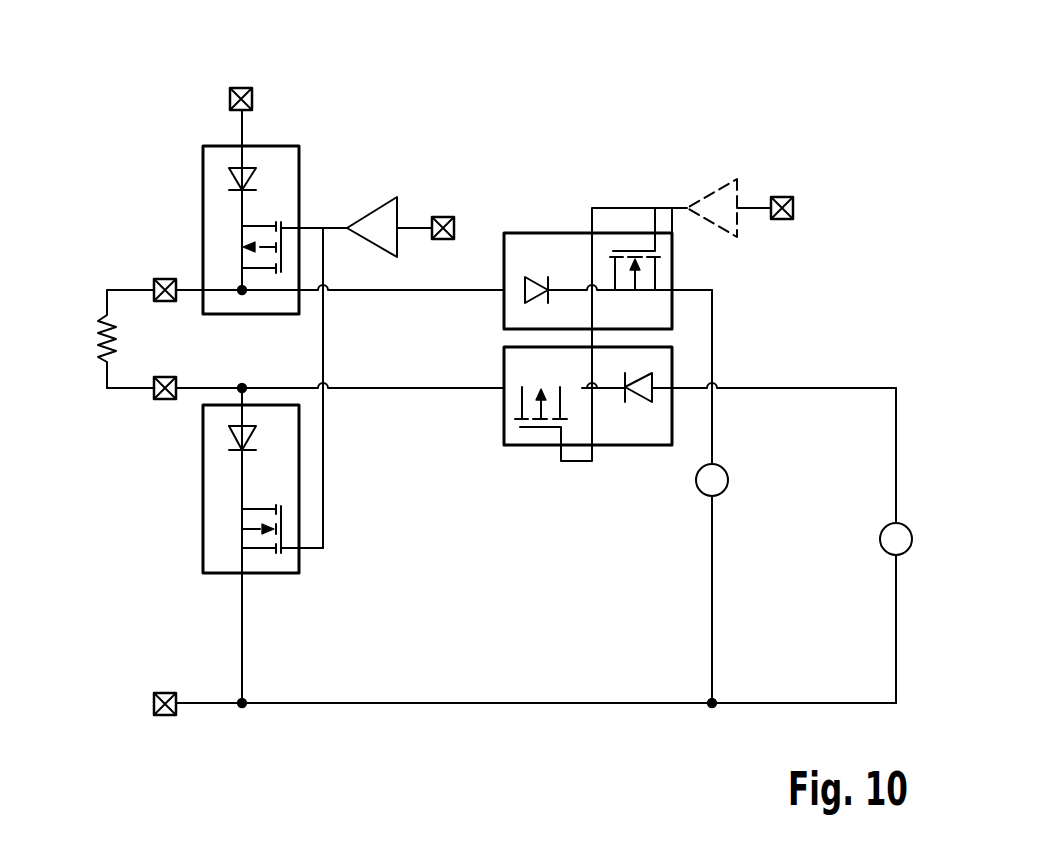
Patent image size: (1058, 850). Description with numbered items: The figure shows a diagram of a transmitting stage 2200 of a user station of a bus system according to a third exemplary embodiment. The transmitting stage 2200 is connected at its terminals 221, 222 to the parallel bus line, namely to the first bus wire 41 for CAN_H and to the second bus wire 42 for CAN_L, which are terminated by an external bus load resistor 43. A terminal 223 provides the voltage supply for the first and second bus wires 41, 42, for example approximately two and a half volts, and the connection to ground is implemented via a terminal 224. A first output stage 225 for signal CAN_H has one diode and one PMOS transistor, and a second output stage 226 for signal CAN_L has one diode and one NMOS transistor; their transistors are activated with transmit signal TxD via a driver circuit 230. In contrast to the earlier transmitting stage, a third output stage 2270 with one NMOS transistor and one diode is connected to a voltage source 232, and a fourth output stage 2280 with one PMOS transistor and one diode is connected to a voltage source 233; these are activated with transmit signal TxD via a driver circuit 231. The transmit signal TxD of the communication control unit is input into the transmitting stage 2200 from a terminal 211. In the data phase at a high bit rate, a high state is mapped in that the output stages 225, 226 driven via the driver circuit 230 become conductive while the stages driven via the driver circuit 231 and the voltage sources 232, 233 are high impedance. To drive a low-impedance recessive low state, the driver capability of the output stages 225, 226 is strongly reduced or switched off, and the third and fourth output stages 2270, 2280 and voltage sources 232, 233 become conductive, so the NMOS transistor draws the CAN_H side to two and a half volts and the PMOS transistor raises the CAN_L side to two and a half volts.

The transmitting stage 2200 is at (830, 98).
The first bus wire 41 is at (107, 289).
The second bus wire 42 is at (107, 390).
The external bus load resistor 43 is at (99, 331).
The terminal 221 is at (165, 278).
The terminal 222 is at (164, 401).
The terminal 223 is at (253, 99).
The terminal 224 is at (164, 692).
The first output stage 225 is at (203, 145).
The second output stage 226 is at (203, 490).
The driver circuit 230 is at (360, 218).
The driver circuit 231 is at (699, 198).
The terminal 211 is at (443, 216).
The third output stage 2270 is at (504, 315).
The fourth output stage 2280 is at (504, 427).
The voltage source 232 is at (696, 480).
The voltage source 233 is at (880, 539).